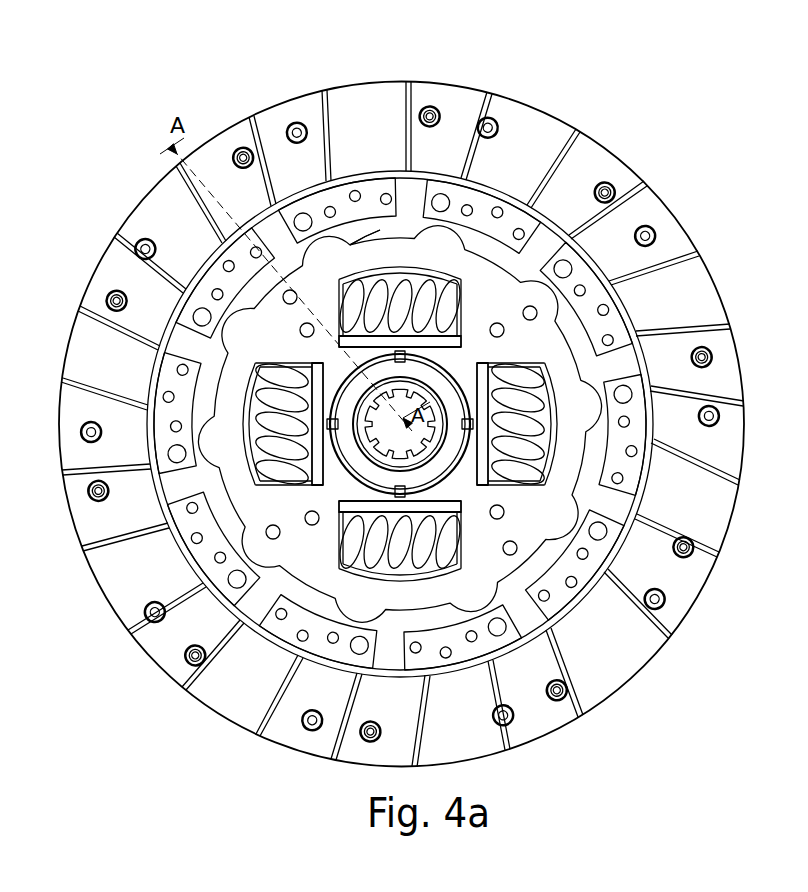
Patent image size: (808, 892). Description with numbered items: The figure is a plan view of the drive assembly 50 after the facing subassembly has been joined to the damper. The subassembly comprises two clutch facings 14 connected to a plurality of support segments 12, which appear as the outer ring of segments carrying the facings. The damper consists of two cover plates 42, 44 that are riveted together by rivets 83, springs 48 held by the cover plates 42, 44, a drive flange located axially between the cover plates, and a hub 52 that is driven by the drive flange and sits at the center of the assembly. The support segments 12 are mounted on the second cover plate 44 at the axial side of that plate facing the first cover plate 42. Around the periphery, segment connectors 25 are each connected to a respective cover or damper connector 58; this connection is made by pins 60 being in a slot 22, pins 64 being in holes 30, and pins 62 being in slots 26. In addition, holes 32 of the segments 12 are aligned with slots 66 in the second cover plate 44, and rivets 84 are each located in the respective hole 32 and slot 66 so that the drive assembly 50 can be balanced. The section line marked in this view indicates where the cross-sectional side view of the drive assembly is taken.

The support segments 12 is at (480, 200).
The clutch facings 14 is at (583, 167).
The slot 22 is at (307, 299).
The segment connectors 25 is at (204, 346).
The slots 26 is at (393, 213).
The holes 30 is at (310, 228).
The holes 32 is at (367, 213).
The slots 66 is at (365, 237).
The first cover plate 42 is at (556, 497).
The second cover plate 44 is at (617, 362).
The springs 48 is at (520, 373).
The drive assembly 50 is at (165, 745).
The hub 52 is at (433, 400).
The damper connector 58 is at (235, 313).
The pins 60 is at (300, 213).
The pins 62 is at (385, 193).
The pins 64 is at (328, 206).
The rivets 83 is at (278, 538).
The rivets 84 is at (355, 190).